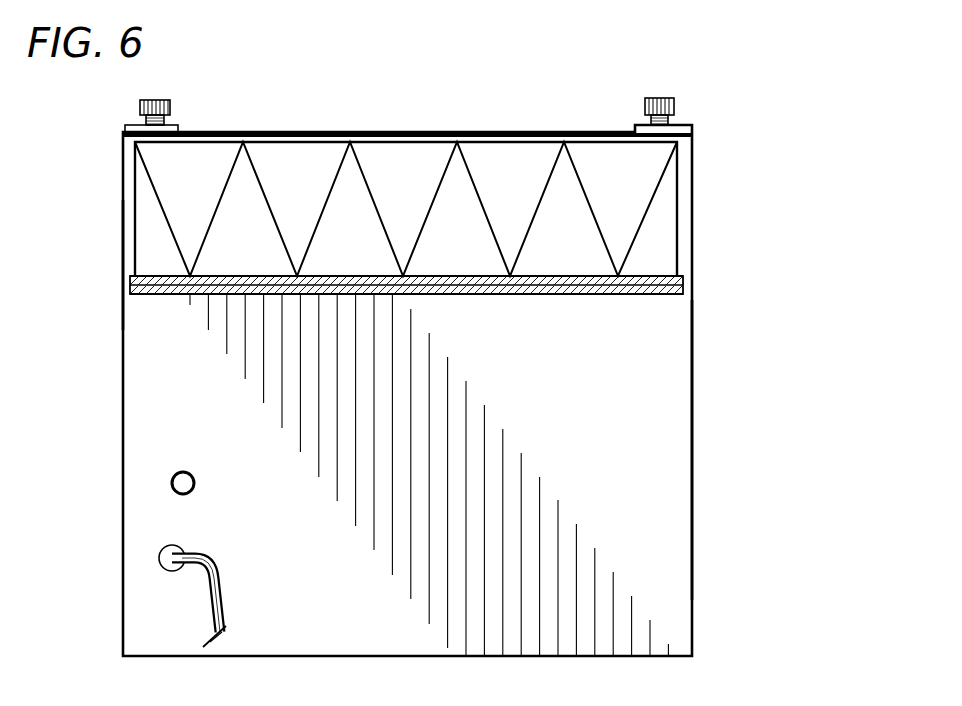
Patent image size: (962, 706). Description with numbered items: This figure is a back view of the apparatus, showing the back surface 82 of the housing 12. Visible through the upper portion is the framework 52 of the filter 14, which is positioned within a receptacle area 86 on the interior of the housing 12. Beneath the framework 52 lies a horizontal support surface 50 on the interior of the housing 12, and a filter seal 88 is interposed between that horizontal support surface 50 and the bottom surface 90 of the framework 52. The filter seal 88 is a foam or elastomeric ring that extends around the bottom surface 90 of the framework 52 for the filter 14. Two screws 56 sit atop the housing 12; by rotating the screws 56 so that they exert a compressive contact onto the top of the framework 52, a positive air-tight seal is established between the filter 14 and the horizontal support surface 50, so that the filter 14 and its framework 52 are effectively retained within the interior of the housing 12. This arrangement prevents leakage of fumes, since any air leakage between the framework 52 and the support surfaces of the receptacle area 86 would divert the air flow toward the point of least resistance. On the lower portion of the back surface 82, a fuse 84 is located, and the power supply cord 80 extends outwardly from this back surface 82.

The housing 12 is at (692, 500).
The filter 14 is at (668, 192).
The horizontal support surface 50 is at (447, 286).
The framework 52 is at (677, 220).
The screws 56 is at (172, 104).
The power supply cord 80 is at (210, 556).
The back surface 82 is at (692, 383).
The fuse 84 is at (192, 476).
The receptacle area 86 is at (142, 247).
The filter seal 88 is at (683, 285).
The bottom surface 90 is at (640, 275).